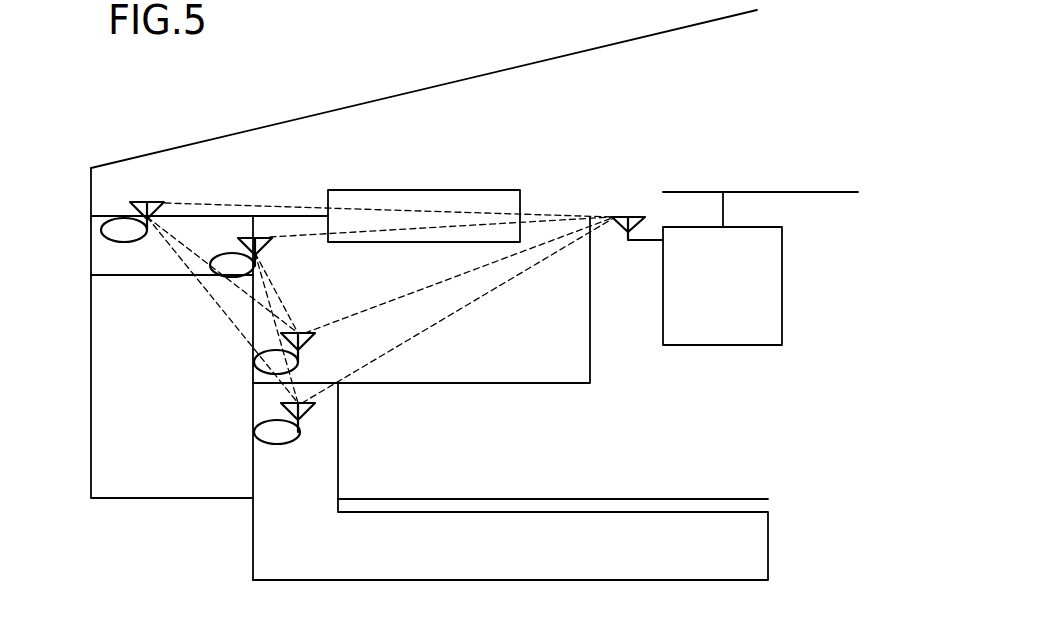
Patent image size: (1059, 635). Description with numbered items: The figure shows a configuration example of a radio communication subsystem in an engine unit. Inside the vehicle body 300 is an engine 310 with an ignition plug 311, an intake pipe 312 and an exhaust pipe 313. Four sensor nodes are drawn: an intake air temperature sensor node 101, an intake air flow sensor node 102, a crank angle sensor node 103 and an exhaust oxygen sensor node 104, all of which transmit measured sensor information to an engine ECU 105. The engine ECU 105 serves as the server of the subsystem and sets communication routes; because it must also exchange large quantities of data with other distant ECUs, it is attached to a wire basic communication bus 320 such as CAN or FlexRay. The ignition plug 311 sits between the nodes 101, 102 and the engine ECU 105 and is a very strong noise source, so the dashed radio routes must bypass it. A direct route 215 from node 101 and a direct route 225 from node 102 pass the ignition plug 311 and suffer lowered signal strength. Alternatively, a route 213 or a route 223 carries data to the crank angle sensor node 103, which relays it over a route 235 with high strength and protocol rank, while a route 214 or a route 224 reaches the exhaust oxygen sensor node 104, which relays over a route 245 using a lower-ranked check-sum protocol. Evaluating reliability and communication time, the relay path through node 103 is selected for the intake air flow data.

The intake air temperature sensor node 101 is at (102, 230).
The intake air flow sensor node 102 is at (211, 268).
The crank angle sensor node 103 is at (255, 366).
The exhaust oxygen sensor node 104 is at (255, 436).
The engine ECU 105 is at (723, 345).
The route from transmission node 101 to relay node 103 213 is at (192, 240).
The route from transmission node 101 to relay node 104 214 is at (237, 322).
The route for direct communication between node 101 and node 105 215 is at (180, 203).
The route from transmission node 102 to relay node 103 223 is at (278, 325).
The route from transmission node 102 to relay node 104 224 is at (268, 284).
The route for direct communication between node 102 and node 105 225 is at (283, 235).
The route from relay node 103 to reception node 105 235 is at (522, 253).
The route from relay node 104 to reception node 105 245 is at (463, 310).
The vehicle body 300 is at (421, 88).
The engine 310 is at (533, 383).
The ignition plug 311 is at (423, 190).
The intake pipe 312 is at (118, 278).
The exhaust pipe 313 is at (252, 538).
The wire basic communication bus 320 is at (770, 192).